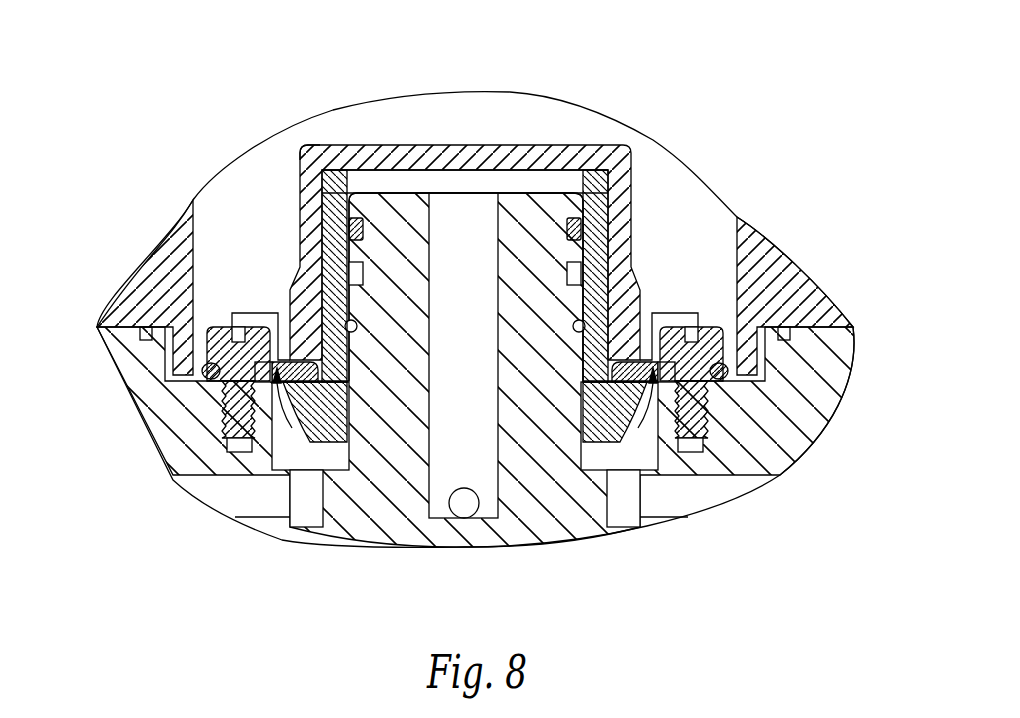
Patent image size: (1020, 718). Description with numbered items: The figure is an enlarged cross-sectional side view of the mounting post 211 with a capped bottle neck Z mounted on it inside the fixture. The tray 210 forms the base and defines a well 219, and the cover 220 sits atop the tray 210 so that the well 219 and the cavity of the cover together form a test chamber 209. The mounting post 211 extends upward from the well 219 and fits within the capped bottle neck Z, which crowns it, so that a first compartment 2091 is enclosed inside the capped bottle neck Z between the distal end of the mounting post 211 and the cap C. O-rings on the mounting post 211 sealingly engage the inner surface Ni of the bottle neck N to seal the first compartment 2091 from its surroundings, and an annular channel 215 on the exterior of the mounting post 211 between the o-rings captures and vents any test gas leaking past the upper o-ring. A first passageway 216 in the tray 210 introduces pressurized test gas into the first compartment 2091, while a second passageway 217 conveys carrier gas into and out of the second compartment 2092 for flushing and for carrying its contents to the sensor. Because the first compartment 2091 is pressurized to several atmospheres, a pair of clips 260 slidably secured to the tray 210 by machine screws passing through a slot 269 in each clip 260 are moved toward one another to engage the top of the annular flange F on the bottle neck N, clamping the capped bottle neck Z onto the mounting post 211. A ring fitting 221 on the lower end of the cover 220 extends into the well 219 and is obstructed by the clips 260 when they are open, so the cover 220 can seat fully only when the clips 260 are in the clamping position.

The test chamber 209 is at (673, 207).
The first compartment 2091 is at (545, 185).
The second compartment 2092 is at (432, 123).
The tray 210 is at (135, 390).
The mounting post 211 is at (397, 397).
The annular channel 215 is at (347, 273).
The first passageway 216 is at (464, 462).
The second passageway 217 is at (308, 505).
The well 219 is at (282, 450).
The cover 220 is at (170, 245).
The ring fitting 221 is at (147, 353).
The clip 260 is at (208, 365).
The slot 269 is at (227, 437).
The cap C is at (497, 145).
The capped bottle neck Z is at (310, 147).
The bottle neck N is at (330, 197).
The inner surface of the bottle neck Ni is at (350, 358).
The annular flange F is at (619, 426).